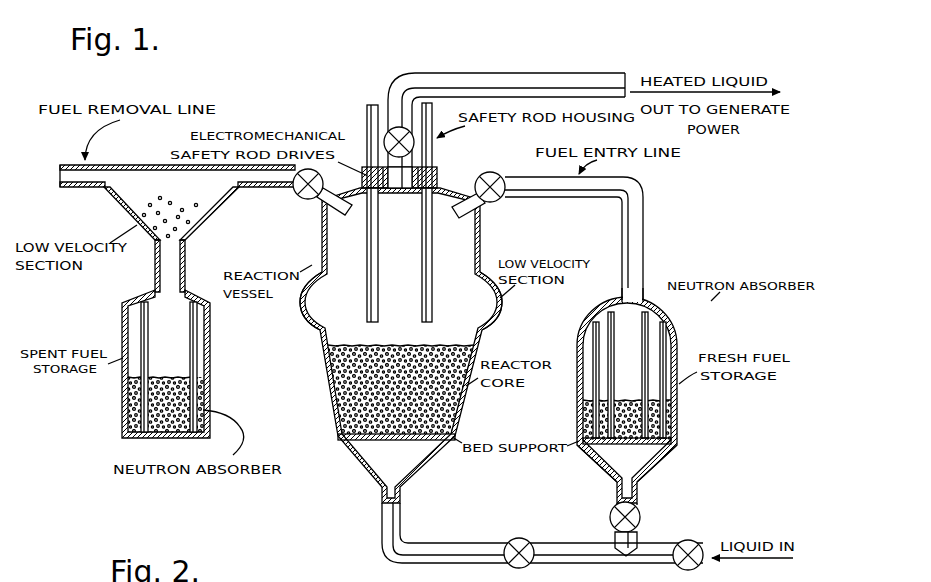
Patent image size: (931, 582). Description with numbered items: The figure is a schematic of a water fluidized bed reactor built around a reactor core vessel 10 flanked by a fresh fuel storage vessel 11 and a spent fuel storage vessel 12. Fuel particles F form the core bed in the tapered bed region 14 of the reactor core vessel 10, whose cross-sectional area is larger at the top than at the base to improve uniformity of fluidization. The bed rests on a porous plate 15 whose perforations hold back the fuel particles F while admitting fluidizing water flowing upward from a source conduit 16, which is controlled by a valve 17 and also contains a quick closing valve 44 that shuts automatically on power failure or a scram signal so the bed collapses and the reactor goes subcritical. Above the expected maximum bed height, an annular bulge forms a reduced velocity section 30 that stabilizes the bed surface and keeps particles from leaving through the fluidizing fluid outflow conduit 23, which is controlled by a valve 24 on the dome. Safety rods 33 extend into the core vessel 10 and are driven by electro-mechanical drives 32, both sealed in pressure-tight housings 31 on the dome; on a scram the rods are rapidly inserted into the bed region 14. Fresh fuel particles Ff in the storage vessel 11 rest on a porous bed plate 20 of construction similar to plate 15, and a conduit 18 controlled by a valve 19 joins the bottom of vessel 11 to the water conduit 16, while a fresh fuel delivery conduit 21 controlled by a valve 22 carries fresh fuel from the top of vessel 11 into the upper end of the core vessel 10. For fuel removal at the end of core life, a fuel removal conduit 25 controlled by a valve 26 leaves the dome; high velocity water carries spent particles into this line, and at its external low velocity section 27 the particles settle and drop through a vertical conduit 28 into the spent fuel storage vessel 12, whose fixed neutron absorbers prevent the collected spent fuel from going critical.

The reactor core vessel 10 is at (470, 399).
The fresh fuel storage vessel 11 is at (678, 349).
The spent fuel storage vessel 12 is at (211, 342).
The bed region 14 is at (347, 403).
The porous plate 15 is at (428, 443).
The source conduit 16 is at (564, 558).
The valve 17 is at (527, 541).
The conduit 18 is at (639, 533).
The valve 19 is at (641, 513).
The porous bed plate 20 is at (650, 451).
The fresh fuel delivery conduit 21 is at (630, 178).
The valve 22 is at (491, 177).
The fluidizing fluid outflow conduit 23 is at (410, 166).
The valve 24 is at (385, 138).
The fuel removal conduit 25 is at (280, 192).
The valve 26 is at (309, 198).
The low velocity section 27 is at (219, 203).
The vertical conduit 28 is at (182, 273).
The reduced velocity section 30 is at (302, 321).
The pressure-tight housings 31 is at (367, 105).
The electro-mechanical drives 32 is at (440, 178).
The safety rods 33 is at (380, 228).
The quick closing valve 44 is at (696, 567).
The fuel particles F is at (468, 415).
The fresh fuel particles Ff is at (674, 421).